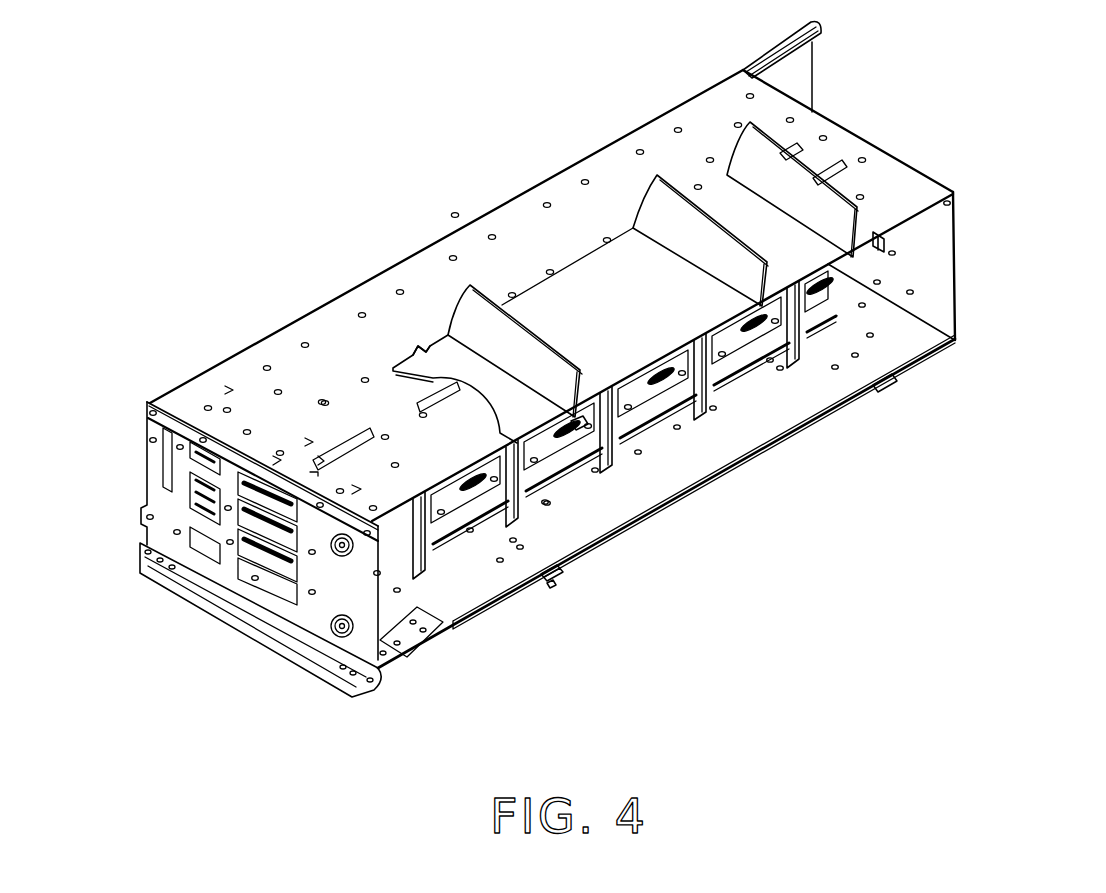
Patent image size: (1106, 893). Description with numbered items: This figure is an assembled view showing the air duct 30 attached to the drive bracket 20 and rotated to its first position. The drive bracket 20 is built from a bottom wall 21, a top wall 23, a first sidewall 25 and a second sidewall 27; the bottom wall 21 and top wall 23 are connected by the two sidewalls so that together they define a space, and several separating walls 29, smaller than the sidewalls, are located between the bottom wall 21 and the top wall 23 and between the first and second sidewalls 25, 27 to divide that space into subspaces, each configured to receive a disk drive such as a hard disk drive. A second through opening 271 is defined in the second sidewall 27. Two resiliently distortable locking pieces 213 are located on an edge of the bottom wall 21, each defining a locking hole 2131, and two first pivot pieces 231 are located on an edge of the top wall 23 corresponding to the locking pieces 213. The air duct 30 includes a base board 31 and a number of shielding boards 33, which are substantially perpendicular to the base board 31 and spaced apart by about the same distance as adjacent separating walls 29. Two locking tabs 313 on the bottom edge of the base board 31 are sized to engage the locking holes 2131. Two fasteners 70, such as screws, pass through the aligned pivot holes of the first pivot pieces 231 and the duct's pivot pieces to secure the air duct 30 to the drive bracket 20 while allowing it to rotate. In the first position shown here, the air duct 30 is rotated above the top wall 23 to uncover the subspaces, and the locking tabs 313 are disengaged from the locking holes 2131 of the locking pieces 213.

The drive bracket 20 is at (218, 356).
The bottom wall 21 is at (907, 340).
The locking piece 213 is at (562, 573).
The locking hole 2131 is at (553, 585).
The top wall 23 is at (610, 163).
The first pivot piece 231 is at (607, 445).
The first sidewall 25 is at (312, 610).
The second sidewall 27 is at (940, 290).
The second through opening 271 is at (875, 249).
The separating wall 29 is at (688, 387).
The air duct 30 is at (850, 173).
The base board 31 is at (580, 283).
The locking tab 313 is at (417, 342).
The shielding board 33 is at (470, 312).
The fastener 70 is at (580, 427).